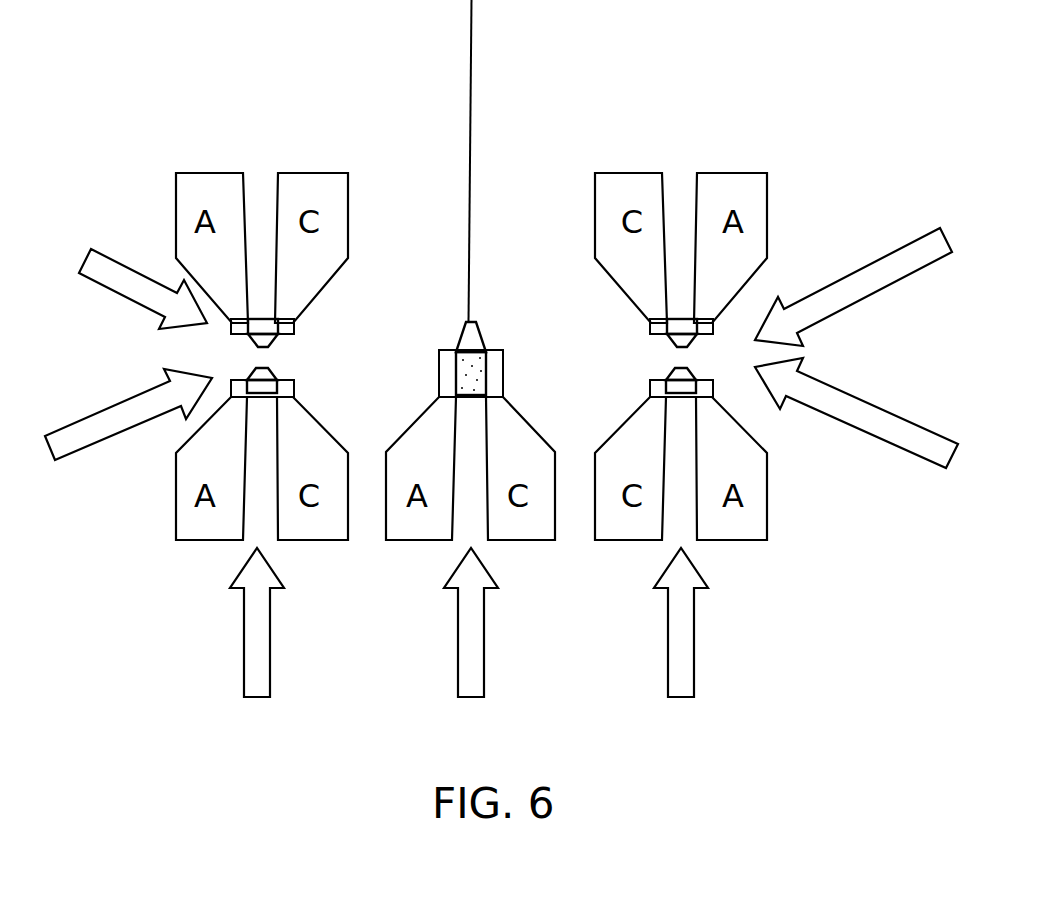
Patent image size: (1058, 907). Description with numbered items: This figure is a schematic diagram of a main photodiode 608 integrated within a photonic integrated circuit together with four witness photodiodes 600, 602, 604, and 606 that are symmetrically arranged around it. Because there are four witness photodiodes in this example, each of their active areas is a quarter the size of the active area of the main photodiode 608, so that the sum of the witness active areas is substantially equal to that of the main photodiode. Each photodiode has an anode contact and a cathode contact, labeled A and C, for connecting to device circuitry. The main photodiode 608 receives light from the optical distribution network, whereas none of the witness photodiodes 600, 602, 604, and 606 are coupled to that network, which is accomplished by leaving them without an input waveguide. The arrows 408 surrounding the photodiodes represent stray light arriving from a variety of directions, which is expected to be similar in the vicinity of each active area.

The arrows 408 is at (120, 262).
The witness photodiode 600 is at (300, 343).
The witness photodiode 602 is at (630, 345).
The witness photodiode 604 is at (305, 374).
The witness photodiode 606 is at (630, 378).
The main photodiode 608 is at (433, 322).